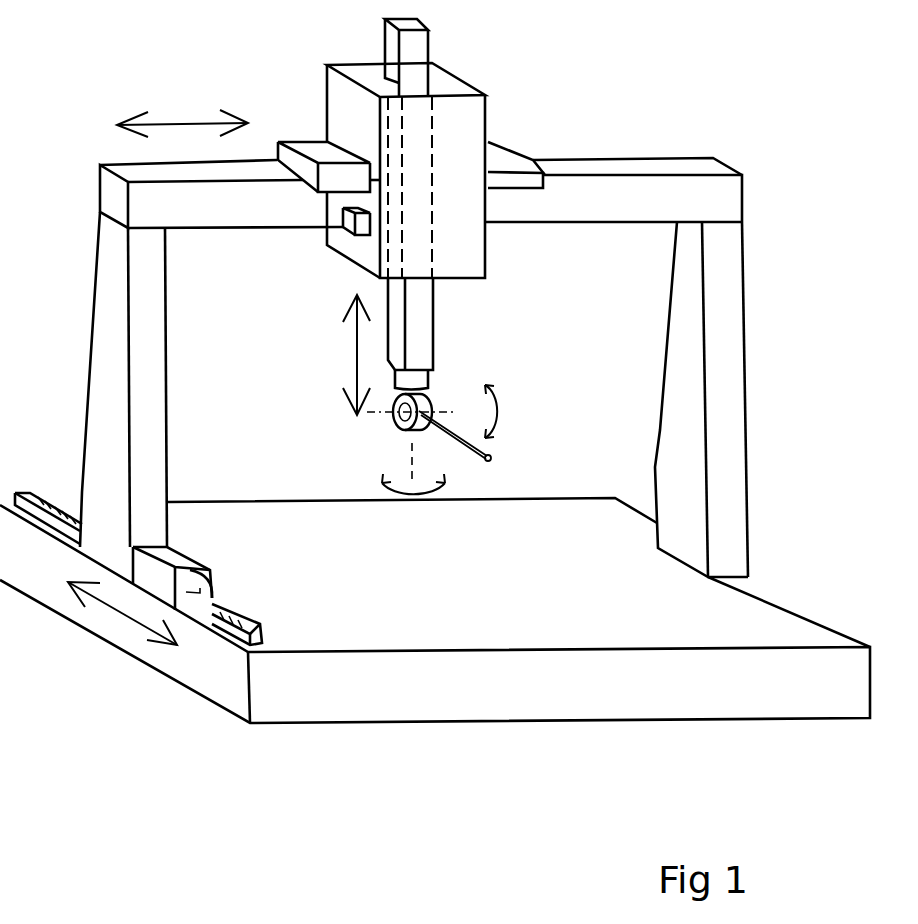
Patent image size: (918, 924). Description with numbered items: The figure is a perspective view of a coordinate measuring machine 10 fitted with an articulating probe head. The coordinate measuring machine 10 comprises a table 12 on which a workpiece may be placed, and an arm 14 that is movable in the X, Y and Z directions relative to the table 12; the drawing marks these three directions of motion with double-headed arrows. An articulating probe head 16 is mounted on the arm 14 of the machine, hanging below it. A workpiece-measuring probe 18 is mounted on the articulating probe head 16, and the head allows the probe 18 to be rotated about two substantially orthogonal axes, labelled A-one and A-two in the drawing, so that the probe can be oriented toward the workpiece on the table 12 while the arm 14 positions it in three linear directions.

The coordinate measuring machine 10 is at (668, 97).
The table 12 is at (460, 688).
The arm 14 is at (415, 325).
The articulating probe head 16 is at (383, 435).
The workpiece-measuring probe 18 is at (455, 450).